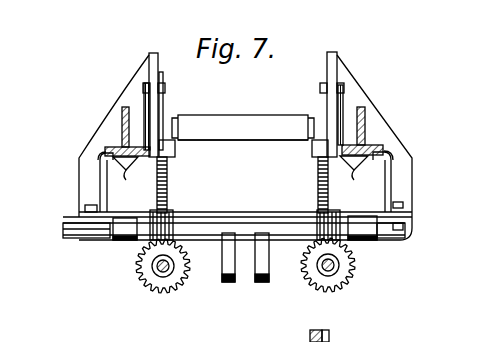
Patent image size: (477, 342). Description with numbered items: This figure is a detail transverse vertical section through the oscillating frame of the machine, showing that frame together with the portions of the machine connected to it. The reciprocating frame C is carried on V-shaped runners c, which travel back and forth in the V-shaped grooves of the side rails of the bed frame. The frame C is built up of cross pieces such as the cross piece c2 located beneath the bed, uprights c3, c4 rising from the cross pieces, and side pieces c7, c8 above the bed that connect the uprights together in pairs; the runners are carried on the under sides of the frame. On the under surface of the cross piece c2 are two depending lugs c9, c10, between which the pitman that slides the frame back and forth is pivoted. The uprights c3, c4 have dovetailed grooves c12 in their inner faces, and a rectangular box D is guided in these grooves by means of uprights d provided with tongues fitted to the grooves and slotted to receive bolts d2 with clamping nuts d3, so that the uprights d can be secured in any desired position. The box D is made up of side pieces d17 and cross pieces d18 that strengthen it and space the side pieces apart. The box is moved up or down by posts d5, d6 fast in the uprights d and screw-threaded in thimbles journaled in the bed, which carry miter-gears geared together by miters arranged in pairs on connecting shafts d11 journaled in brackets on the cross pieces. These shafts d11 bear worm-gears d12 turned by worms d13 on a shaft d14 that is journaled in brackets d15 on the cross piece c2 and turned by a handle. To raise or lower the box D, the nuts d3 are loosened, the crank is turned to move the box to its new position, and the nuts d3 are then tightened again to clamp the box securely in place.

The reciprocating frame C is at (123, 120).
The V-shaped runner c is at (240, 174).
The cross piece c2 is at (220, 222).
The upright c3 is at (127, 106).
The upright c4 is at (385, 150).
The side piece c7 is at (100, 157).
The side piece c8 is at (395, 158).
The depending lug c9 is at (268, 282).
The depending lug c10 is at (229, 282).
The dovetailed groove c12 is at (330, 338).
The upright d is at (163, 110).
The bolt d2 is at (343, 88).
The clamping nut d3 is at (165, 88).
The post d5 is at (167, 190).
The post d6 is at (318, 186).
The connecting shaft d11 is at (163, 270).
The worm-gear d12 is at (176, 274).
The worm d13 is at (175, 221).
The shaft d14 is at (98, 239).
The bracket d15 is at (125, 241).
The side piece d17 is at (178, 132).
The cross piece d18 is at (243, 127).
The rectangular box D is at (306, 131).